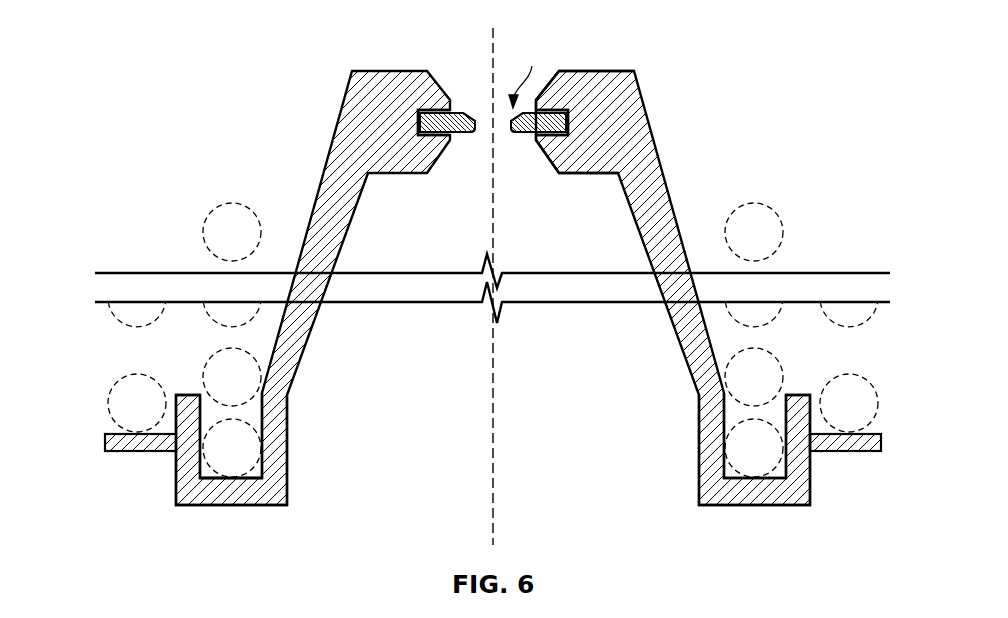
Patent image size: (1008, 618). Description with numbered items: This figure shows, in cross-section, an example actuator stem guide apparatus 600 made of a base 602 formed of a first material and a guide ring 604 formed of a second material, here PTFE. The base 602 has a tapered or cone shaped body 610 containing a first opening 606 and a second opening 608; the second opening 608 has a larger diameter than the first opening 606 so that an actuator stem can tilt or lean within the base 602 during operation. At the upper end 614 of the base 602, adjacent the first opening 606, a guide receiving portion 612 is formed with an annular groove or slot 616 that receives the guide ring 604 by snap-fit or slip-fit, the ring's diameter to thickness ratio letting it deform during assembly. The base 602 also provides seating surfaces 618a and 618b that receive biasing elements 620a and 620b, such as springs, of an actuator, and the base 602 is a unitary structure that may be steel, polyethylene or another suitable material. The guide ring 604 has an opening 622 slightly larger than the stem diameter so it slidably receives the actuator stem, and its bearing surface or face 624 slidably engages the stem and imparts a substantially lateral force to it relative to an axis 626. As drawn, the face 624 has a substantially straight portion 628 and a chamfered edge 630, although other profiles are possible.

The actuator stem guide apparatus 600 is at (787, 44).
The base 602 is at (699, 470).
The guide ring 604 is at (547, 136).
The first opening 606 is at (450, 108).
The second opening 608 is at (287, 482).
The tapered or cone shaped body 610 is at (672, 193).
The guide receiving portion 612 is at (624, 73).
The upper end 614 is at (343, 100).
The annular groove or slot 616 is at (568, 120).
The seating surface 618a is at (202, 478).
The seating surface 618b is at (108, 434).
The biasing element 620a is at (205, 233).
The biasing element 620b is at (112, 400).
The opening 622 is at (511, 133).
The bearing surface or face 624 is at (532, 72).
The axis 626 is at (493, 432).
The substantially straight portion 628 is at (476, 136).
The chamfered edge 630 is at (471, 112).